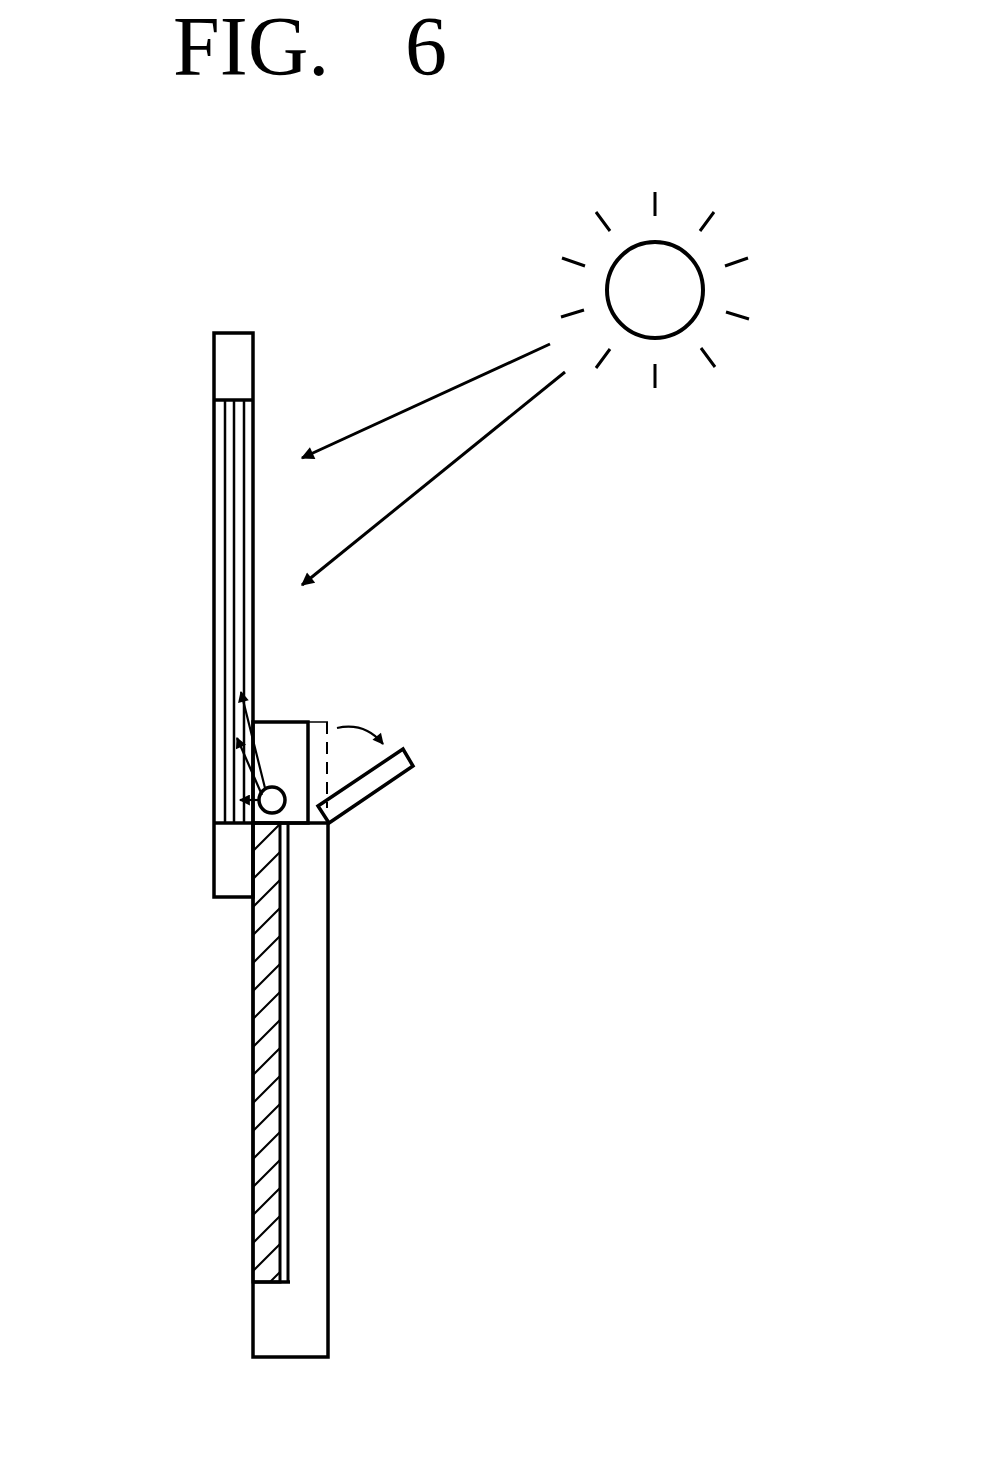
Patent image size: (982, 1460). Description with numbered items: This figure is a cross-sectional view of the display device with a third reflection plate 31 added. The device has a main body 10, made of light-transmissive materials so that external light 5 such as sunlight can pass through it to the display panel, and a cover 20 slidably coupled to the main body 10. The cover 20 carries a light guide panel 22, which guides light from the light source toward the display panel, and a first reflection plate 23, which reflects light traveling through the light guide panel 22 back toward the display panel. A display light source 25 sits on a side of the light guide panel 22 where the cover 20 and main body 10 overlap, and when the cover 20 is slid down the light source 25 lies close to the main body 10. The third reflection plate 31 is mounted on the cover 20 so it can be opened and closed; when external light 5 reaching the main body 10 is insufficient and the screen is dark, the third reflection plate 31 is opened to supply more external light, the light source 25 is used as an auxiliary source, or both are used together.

The external light 5 is at (730, 340).
The main body 10 is at (183, 525).
The cover 20 is at (308, 1027).
The light guide panel 22 is at (258, 1005).
The first reflection plate 23 is at (283, 1133).
The display light source 25 is at (278, 798).
The third reflection plate 31 is at (390, 770).